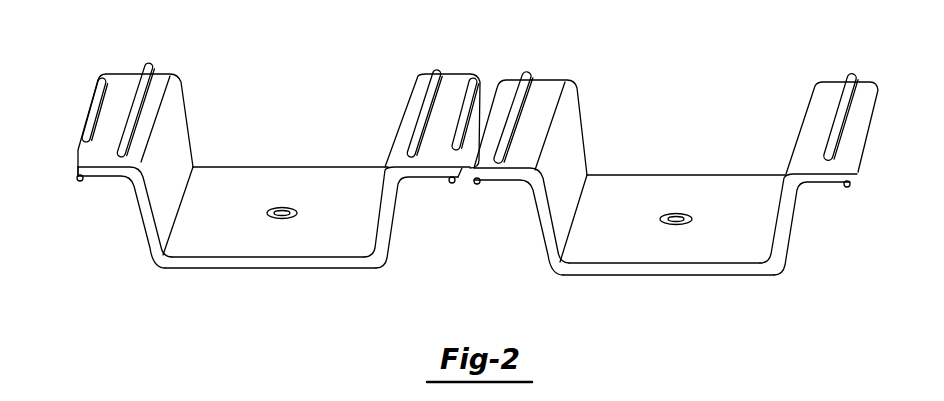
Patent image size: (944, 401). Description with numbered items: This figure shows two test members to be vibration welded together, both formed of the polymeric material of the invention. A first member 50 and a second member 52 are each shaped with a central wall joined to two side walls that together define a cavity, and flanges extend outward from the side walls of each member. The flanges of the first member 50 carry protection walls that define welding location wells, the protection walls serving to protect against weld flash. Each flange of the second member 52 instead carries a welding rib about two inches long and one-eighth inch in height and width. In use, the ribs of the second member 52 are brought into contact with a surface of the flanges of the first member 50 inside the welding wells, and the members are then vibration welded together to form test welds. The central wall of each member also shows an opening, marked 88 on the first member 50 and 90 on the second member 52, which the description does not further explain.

The first member 50 is at (192, 280).
The second member 52 is at (753, 284).
The aperture 88 is at (285, 207).
The aperture 90 is at (679, 212).